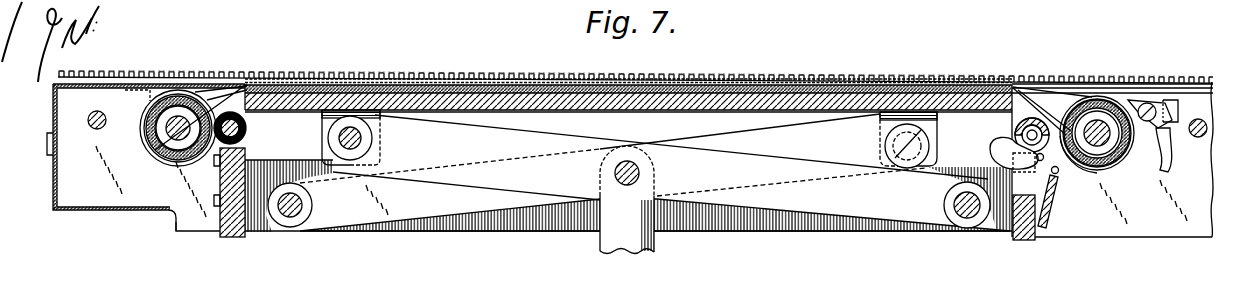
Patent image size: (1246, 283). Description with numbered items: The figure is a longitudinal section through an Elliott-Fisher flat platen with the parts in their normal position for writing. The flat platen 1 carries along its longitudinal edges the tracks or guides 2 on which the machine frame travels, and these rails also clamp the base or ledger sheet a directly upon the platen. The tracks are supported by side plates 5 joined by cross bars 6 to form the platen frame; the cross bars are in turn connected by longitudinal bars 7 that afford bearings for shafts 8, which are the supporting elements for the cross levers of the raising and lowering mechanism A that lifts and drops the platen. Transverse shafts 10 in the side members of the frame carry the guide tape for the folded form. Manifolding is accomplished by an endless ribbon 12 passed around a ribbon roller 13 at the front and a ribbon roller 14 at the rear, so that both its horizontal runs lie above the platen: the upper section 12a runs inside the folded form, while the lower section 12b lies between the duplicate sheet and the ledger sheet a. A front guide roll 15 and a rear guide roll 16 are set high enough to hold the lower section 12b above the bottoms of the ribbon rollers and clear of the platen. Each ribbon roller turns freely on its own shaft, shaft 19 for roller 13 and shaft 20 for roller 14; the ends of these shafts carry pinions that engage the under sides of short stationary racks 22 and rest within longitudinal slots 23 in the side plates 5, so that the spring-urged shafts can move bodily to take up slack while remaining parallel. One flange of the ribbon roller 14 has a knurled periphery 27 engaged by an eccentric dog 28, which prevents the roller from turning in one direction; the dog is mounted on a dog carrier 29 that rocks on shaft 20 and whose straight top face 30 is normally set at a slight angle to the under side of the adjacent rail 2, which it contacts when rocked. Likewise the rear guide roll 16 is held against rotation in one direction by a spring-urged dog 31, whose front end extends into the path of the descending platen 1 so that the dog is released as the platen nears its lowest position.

The flat platen 1 is at (680, 97).
The tracks or guides 2 is at (167, 86).
The side plates 5 is at (183, 227).
The cross bars 6 is at (240, 236).
The longitudinal bars 7 is at (497, 231).
The shafts 8 is at (290, 217).
The transverse shafts 10 is at (92, 116).
The endless ribbon 12 is at (219, 100).
The upper section of the ribbon 12a is at (382, 76).
The lower section of the ribbon 12b is at (445, 81).
The ribbon roller 13 is at (146, 157).
The ribbon roller 14 is at (1104, 156).
The guide roll 15 is at (247, 130).
The guide roll 16 is at (1006, 131).
The shaft 19 is at (157, 143).
The shaft 20 is at (1098, 127).
The stationary racks 22 is at (127, 83).
The longitudinal slots 23 is at (147, 132).
The knurled periphery 27 is at (1080, 167).
The eccentric dog 28 is at (1148, 117).
The dog carrier 29 is at (1117, 99).
The straight top face 30 is at (1163, 100).
The spring-urged dog 31 is at (990, 150).
The base or ledger sheet a is at (842, 87).
The platen raising and lowering mechanism A is at (633, 234).